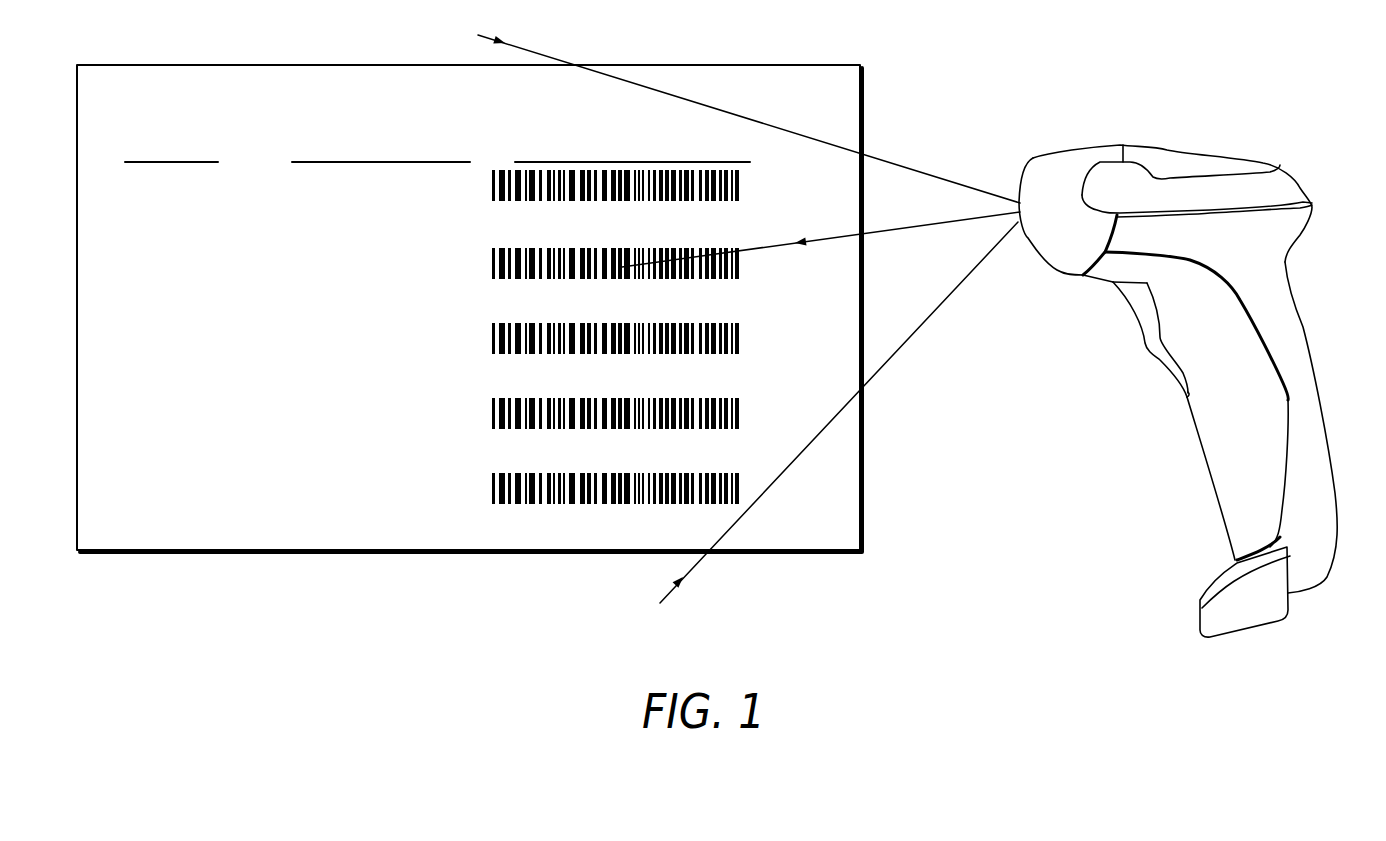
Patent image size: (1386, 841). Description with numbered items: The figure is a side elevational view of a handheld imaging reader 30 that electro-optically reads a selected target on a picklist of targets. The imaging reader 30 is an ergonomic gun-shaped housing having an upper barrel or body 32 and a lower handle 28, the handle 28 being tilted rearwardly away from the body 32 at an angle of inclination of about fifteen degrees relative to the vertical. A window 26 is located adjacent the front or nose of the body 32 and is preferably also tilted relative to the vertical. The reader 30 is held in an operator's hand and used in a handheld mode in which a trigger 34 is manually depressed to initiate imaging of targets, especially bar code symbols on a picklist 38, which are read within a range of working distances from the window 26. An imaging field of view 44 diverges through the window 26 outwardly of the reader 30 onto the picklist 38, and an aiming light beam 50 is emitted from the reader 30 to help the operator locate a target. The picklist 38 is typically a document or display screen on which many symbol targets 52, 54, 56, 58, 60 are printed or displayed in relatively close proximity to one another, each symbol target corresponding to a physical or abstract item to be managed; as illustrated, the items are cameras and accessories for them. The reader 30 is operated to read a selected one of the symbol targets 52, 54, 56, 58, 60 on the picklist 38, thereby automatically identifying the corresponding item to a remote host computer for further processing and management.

The window 26 is at (1022, 187).
The handle 28 is at (1325, 428).
The imaging reader 30 is at (1342, 122).
The body 32 is at (1203, 153).
The trigger 34 is at (1148, 343).
The picklist 38 is at (825, 63).
The imaging field of view 44 is at (540, 53).
The aiming light beam 50 is at (907, 229).
The symbol target 52 is at (750, 190).
The symbol target 54 is at (750, 263).
The symbol target 56 is at (750, 338).
The symbol target 58 is at (750, 408).
The symbol target 60 is at (750, 486).